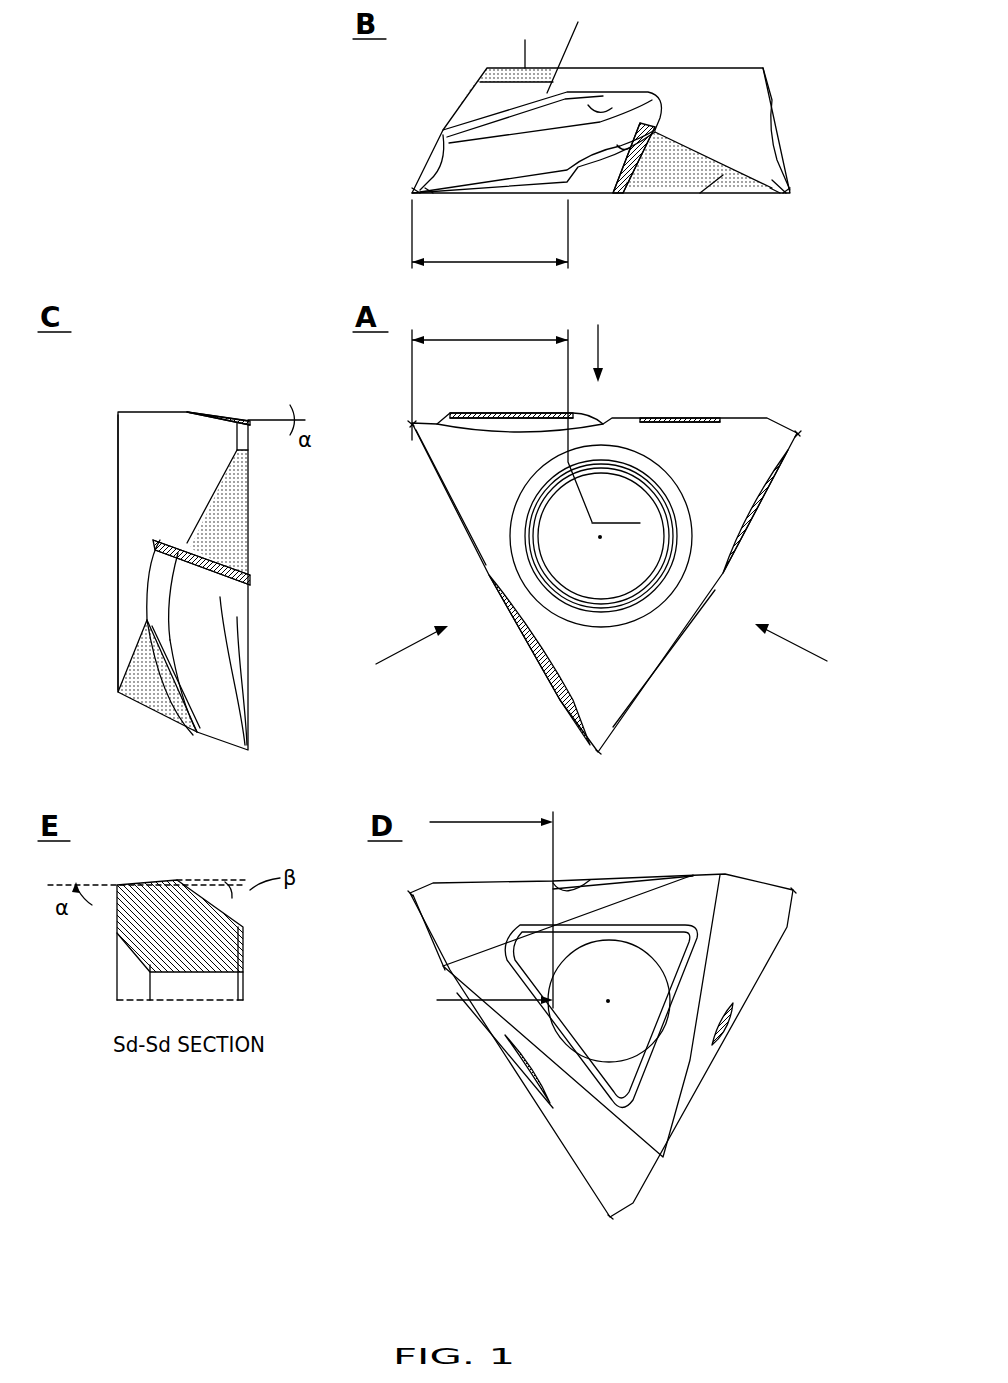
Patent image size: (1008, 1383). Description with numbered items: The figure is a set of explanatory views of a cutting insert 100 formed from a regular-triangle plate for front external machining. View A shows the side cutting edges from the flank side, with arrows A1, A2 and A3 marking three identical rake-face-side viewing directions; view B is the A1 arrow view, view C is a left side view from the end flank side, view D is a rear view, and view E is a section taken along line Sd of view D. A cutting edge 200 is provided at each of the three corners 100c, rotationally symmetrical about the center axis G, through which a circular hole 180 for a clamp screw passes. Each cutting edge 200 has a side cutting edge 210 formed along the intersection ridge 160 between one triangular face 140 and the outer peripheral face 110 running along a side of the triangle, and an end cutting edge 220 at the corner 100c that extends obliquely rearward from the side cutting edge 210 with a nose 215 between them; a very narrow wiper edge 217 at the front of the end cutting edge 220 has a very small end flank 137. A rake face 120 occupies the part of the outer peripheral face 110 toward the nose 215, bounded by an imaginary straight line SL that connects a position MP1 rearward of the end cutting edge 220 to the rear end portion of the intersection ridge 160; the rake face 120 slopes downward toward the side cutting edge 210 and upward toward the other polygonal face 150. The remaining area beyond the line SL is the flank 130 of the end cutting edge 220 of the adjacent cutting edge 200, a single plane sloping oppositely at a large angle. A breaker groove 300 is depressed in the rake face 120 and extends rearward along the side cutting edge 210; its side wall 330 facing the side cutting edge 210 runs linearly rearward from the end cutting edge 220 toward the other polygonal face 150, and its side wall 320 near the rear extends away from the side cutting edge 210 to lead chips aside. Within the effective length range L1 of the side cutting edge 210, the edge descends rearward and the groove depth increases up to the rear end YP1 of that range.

The cutting insert 100 is at (784, 374).
The corner 100c is at (410, 424).
The outer peripheral face 110 is at (612, 421).
The rake face 120 is at (478, 100).
The flank 130 is at (755, 108).
The end flank 137 is at (776, 195).
The triangular face 140 is at (628, 195).
The other polygonal face 150 is at (723, 68).
The intersection ridge 160 is at (725, 195).
The hole 180 is at (545, 554).
The cutting edge 200 is at (412, 422).
The side cutting edge 210 is at (448, 195).
The nose 215 is at (414, 196).
The wiper edge 217 is at (415, 190).
The end cutting edge 220 is at (432, 158).
The breaker groove 300 is at (462, 152).
The side wall 320 is at (620, 145).
The side wall 330 is at (603, 102).
The center axis G is at (603, 537).
The rear end of predetermined range YP1 is at (616, 511).
The position MP1 is at (522, 39).
The straight line SL is at (612, 22).
The length range L1 is at (502, 361).
The section line Sd is at (481, 908).
The arrow view direction A1 is at (599, 337).
The arrow view direction A2 is at (412, 657).
The arrow view direction A3 is at (791, 656).